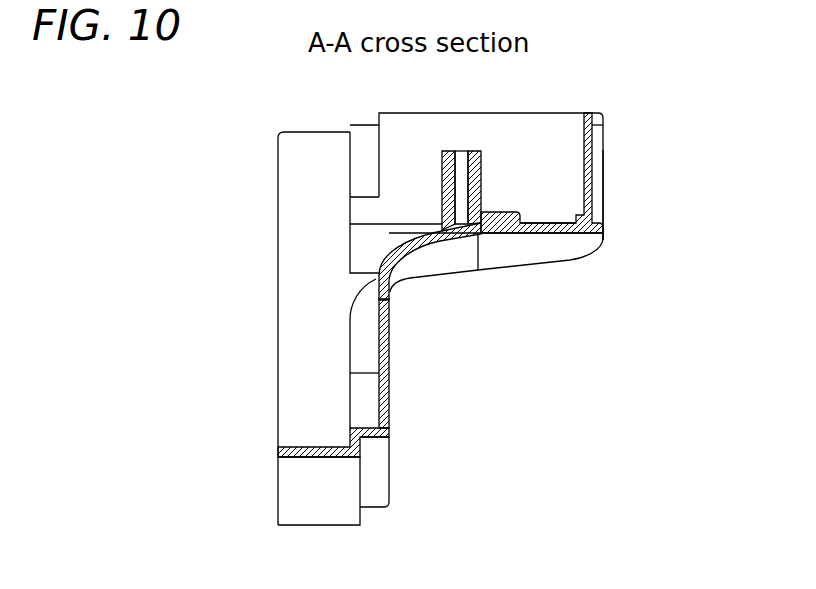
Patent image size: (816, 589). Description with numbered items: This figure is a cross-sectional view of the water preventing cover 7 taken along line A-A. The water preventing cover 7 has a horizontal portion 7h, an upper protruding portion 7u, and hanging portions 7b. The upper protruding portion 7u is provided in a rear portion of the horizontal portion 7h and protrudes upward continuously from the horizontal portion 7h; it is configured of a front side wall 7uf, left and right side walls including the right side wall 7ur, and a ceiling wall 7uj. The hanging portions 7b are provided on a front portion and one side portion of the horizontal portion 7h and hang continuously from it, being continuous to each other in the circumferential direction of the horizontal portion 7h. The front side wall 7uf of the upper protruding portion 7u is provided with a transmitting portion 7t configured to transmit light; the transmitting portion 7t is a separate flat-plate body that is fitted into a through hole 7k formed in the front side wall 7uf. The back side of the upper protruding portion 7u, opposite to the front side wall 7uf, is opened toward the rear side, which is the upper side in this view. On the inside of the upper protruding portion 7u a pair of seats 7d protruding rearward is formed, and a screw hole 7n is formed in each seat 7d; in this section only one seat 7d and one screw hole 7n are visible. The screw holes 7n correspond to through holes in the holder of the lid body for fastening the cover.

The water preventing cover 7 is at (703, 115).
The hanging portion 7b is at (278, 325).
The upper protruding portion 7u is at (603, 130).
The right side wall 7ur is at (548, 145).
The ceiling wall 7uj is at (603, 180).
The through hole 7k is at (548, 222).
The screw hole 7n is at (461, 158).
The seat 7d is at (481, 170).
The front side wall 7uf is at (452, 278).
The horizontal portion 7h is at (390, 363).
The transmitting portion 7t is at (533, 252).